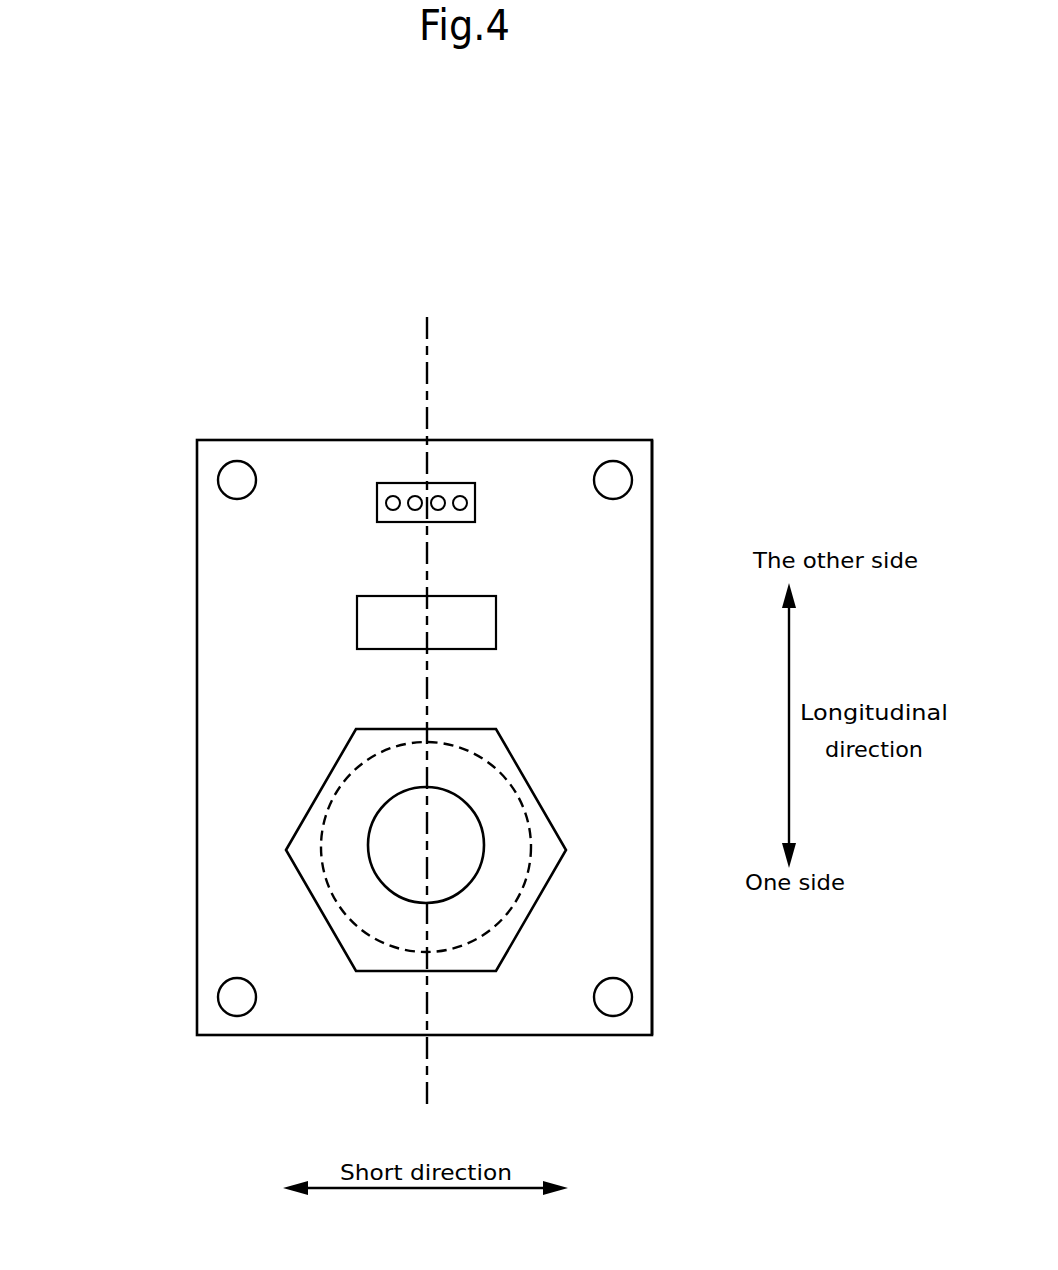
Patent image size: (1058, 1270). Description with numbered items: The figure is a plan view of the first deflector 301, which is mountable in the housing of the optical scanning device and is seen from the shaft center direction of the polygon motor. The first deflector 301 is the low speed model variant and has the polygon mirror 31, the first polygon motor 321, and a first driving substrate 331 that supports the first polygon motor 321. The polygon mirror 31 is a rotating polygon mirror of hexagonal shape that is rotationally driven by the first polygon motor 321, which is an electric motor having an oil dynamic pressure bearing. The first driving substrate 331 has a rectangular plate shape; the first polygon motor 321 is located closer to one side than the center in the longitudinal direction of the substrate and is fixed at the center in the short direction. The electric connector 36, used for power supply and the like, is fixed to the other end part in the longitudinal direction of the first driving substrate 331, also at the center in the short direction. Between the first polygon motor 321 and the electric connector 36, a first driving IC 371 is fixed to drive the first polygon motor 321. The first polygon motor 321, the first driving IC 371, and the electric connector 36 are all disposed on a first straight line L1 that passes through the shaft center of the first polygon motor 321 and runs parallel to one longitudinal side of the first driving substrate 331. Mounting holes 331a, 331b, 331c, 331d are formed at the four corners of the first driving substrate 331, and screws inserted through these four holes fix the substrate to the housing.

The first deflector 301 is at (553, 433).
The first driving substrate 331 is at (652, 521).
The mounting hole 331a is at (622, 994).
The mounting hole 331b is at (233, 981).
The mounting hole 331c is at (236, 462).
The mounting hole 331d is at (630, 482).
The electric connector 36 is at (377, 503).
The first driving IC 371 is at (357, 627).
The polygon mirror 31 is at (548, 820).
The first polygon motor 321 is at (522, 885).
The first straight line L1 is at (418, 358).